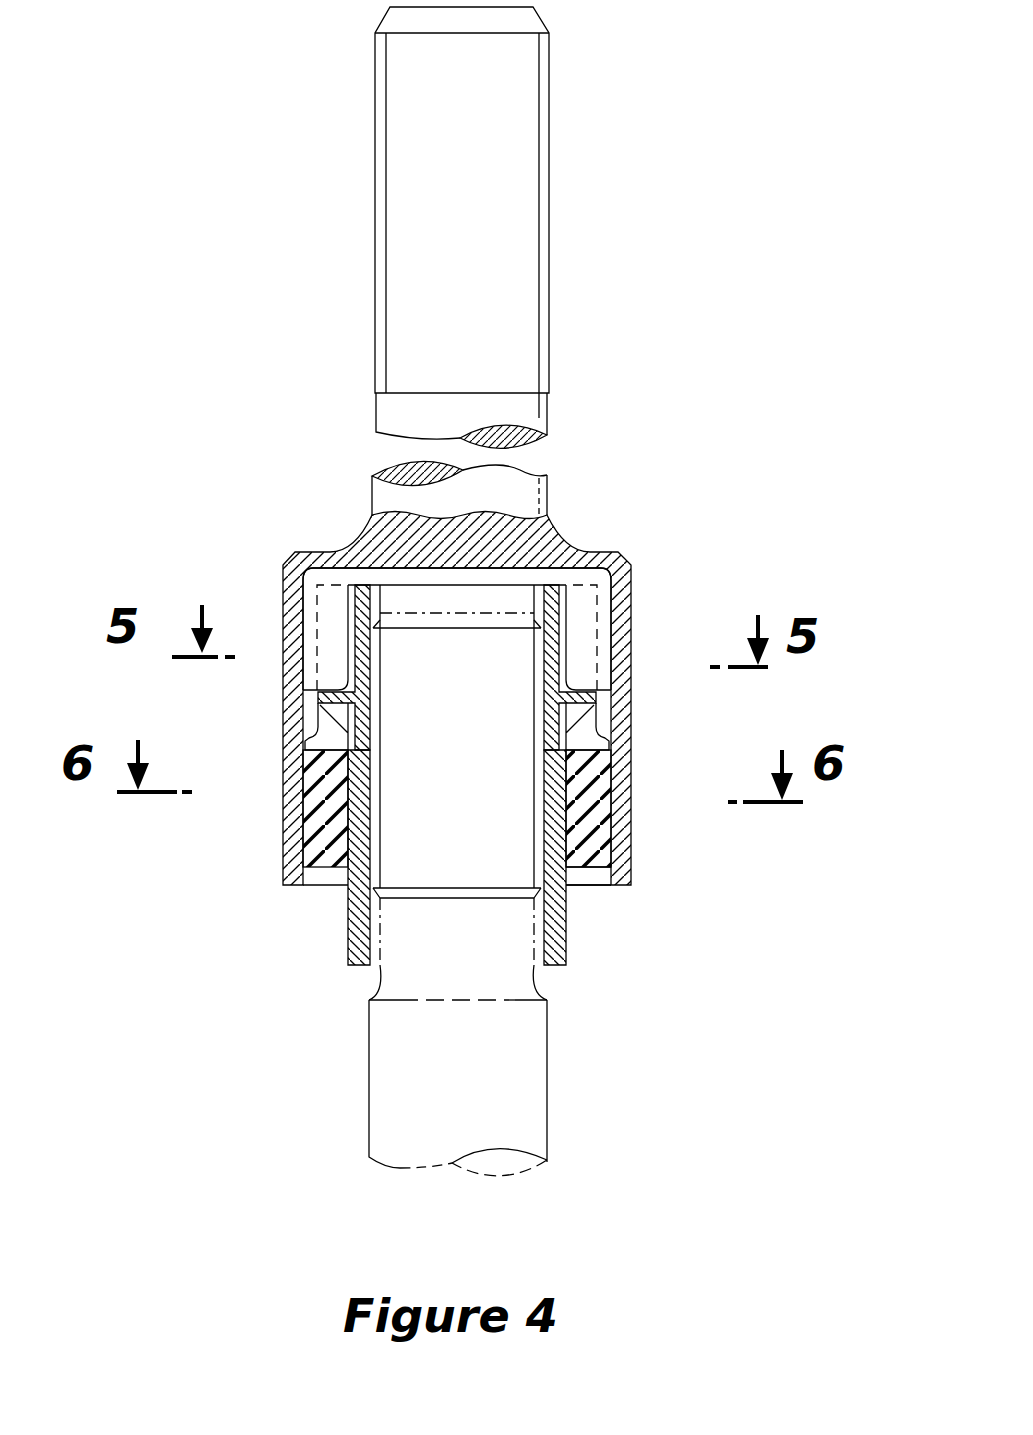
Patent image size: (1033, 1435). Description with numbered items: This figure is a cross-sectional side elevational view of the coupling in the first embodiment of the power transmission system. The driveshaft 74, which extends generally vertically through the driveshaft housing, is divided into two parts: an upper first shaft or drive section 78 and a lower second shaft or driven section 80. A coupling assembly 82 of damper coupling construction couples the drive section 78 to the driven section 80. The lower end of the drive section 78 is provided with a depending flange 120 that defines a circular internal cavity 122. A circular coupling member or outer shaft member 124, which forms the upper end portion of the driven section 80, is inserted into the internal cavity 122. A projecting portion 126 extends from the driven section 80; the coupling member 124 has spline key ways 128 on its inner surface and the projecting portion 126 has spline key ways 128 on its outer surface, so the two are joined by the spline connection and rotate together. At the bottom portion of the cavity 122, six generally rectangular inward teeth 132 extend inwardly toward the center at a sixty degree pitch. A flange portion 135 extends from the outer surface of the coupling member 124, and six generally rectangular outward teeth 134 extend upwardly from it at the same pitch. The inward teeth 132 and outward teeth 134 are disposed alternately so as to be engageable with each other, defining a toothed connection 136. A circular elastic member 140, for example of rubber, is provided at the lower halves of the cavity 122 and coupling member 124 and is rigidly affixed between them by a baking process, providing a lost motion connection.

The driveshaft 74 is at (572, 246).
The drive section 78 is at (534, 472).
The driven section 80 is at (548, 1122).
The coupling assembly 82 is at (641, 525).
The depending flange 120 is at (637, 576).
The internal cavity 122 is at (390, 576).
The coupling member 124 is at (347, 922).
The projecting portion 126 is at (508, 803).
The spline key ways 128 is at (378, 800).
The inward teeth 132 is at (503, 698).
The outward teeth 134 is at (332, 627).
The flange portion 135 is at (583, 723).
The toothed connection 136 is at (583, 635).
The elastic member 140 is at (587, 860).